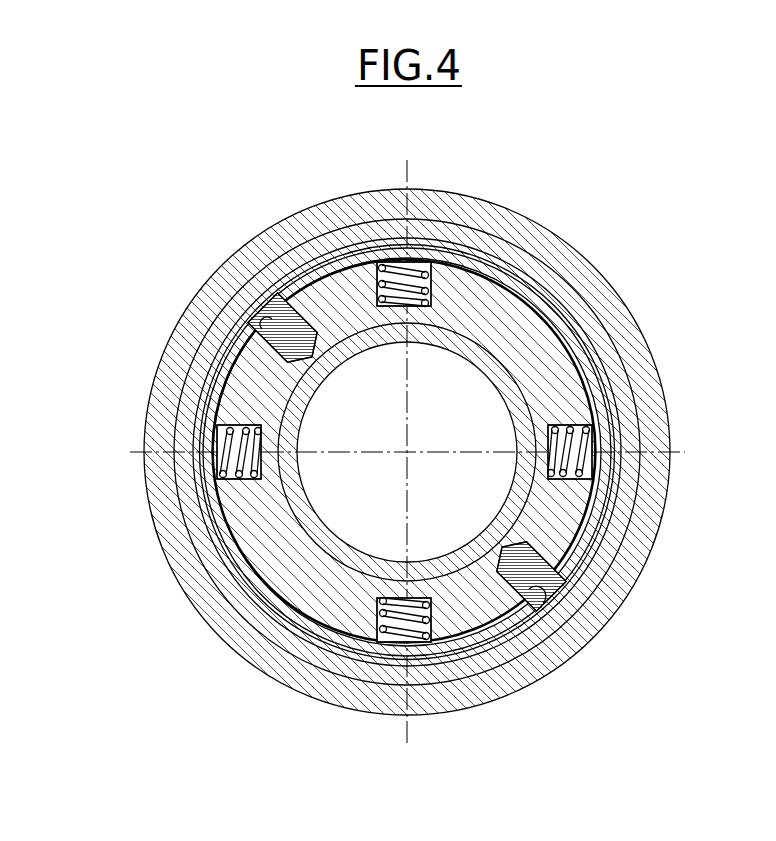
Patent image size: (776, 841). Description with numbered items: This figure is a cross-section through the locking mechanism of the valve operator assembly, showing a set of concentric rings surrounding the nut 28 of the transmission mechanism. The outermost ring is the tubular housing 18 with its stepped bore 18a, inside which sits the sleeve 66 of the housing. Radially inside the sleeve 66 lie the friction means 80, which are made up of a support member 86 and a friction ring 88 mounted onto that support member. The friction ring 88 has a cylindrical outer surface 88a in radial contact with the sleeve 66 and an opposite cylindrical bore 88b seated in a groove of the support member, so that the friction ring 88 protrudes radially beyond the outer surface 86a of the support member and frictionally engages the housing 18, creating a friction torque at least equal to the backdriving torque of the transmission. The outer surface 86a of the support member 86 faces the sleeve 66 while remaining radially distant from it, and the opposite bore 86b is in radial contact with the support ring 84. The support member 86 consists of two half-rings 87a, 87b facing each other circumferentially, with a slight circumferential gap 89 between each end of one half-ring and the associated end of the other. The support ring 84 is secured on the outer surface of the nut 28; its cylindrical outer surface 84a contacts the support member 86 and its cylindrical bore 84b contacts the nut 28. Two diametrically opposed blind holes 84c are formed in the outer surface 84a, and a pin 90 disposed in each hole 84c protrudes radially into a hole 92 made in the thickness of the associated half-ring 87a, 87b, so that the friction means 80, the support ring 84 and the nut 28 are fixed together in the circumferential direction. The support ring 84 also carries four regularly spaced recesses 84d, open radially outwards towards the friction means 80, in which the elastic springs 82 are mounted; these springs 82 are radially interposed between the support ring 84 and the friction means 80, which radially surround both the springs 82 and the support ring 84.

The housing 18 is at (527, 212).
The bore 18a is at (560, 273).
The nut 28 is at (522, 504).
The sleeve 66 is at (453, 230).
The friction means 80 is at (431, 230).
The elastic springs 82 is at (466, 264).
The support ring 84 is at (522, 596).
The cylindrical outer surface 84a is at (453, 562).
The cylindrical bore 84b is at (492, 598).
The holes 84c is at (262, 332).
The recesses 84d is at (403, 262).
The support member 86 is at (603, 342).
The outer surface 86a is at (592, 352).
The bore 86b is at (598, 373).
The half-ring 87a is at (567, 368).
The half-ring 87b is at (236, 362).
The friction ring 88 is at (352, 245).
The cylindrical outer surface 88a is at (330, 247).
The cylindrical bore 88b is at (290, 285).
The circumferential gap 89 is at (583, 320).
The pin 90 is at (278, 333).
The hole 92 is at (268, 311).